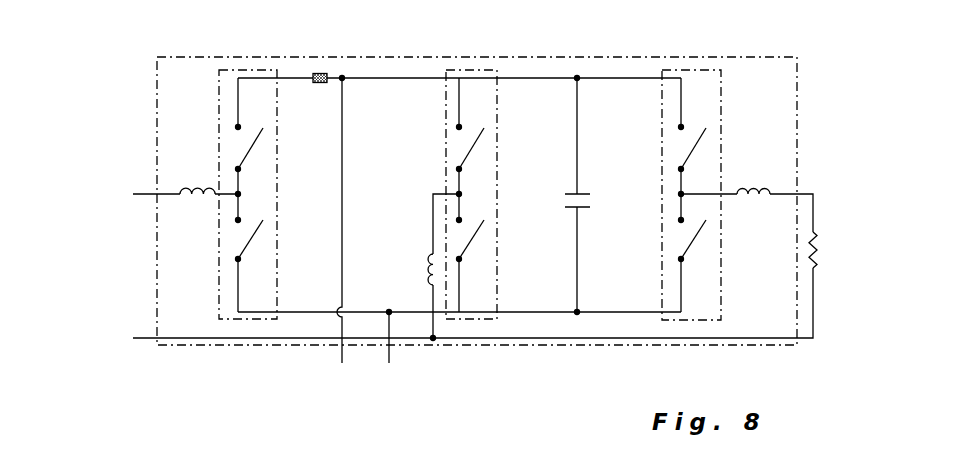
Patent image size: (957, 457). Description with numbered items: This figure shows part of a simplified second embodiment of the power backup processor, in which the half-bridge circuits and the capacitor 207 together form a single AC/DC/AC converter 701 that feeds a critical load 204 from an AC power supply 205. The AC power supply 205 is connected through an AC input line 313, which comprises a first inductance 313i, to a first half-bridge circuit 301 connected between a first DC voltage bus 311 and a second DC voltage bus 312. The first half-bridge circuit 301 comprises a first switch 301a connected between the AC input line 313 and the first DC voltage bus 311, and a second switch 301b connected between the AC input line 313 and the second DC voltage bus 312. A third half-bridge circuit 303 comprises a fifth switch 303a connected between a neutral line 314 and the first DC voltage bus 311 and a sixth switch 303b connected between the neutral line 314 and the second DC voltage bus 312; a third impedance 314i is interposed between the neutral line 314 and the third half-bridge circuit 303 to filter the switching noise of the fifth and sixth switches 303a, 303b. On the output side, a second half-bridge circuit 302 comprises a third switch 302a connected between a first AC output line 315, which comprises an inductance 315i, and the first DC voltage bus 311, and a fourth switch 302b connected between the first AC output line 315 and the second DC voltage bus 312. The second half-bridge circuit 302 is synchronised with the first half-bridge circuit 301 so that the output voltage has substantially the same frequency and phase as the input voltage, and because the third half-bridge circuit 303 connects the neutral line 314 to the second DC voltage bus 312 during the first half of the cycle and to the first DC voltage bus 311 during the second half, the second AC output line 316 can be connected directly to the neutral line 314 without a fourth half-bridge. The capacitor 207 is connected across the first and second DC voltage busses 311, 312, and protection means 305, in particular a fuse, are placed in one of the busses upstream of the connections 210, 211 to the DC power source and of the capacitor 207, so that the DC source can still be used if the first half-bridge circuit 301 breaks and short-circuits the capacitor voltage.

The critical load 204 is at (817, 247).
The AC power supply 205 is at (140, 255).
The capacitor 207 is at (580, 193).
The connection to the DC power source 210 is at (575, 80).
The connection to the DC power source 211 is at (388, 314).
The first half-bridge circuit 301 is at (244, 171).
The first switch 301a is at (248, 150).
The second switch 301b is at (248, 243).
The second half-bridge circuit 302 is at (674, 171).
The third switch 302a is at (692, 147).
The fourth switch 302b is at (688, 243).
The third half-bridge circuit 303 is at (449, 170).
The fifth switch 303a is at (472, 147).
The sixth switch 303b is at (470, 241).
The protection means 305 is at (328, 70).
The first DC voltage bus 311 is at (527, 78).
The second DC voltage bus 312 is at (538, 313).
The AC input line 313 is at (145, 143).
The first inductance 313i is at (207, 187).
The neutral line 314 is at (204, 337).
The third impedance 314i is at (430, 285).
The first AC output line 315 is at (772, 154).
The inductance 315i is at (738, 193).
The second AC output line 316 is at (747, 338).
The AC/DC/AC converter 701 is at (603, 56).